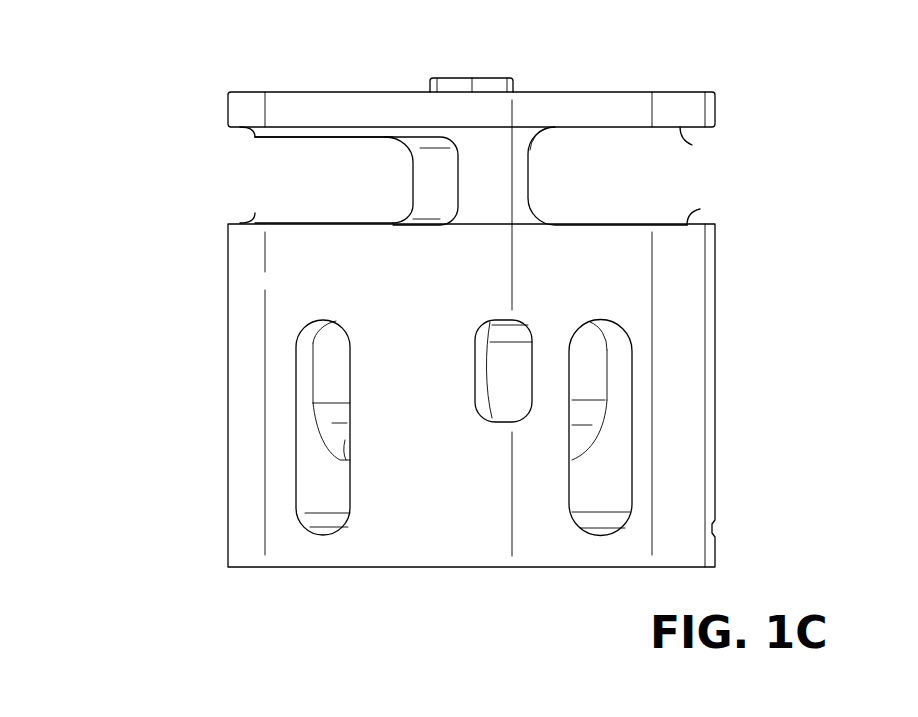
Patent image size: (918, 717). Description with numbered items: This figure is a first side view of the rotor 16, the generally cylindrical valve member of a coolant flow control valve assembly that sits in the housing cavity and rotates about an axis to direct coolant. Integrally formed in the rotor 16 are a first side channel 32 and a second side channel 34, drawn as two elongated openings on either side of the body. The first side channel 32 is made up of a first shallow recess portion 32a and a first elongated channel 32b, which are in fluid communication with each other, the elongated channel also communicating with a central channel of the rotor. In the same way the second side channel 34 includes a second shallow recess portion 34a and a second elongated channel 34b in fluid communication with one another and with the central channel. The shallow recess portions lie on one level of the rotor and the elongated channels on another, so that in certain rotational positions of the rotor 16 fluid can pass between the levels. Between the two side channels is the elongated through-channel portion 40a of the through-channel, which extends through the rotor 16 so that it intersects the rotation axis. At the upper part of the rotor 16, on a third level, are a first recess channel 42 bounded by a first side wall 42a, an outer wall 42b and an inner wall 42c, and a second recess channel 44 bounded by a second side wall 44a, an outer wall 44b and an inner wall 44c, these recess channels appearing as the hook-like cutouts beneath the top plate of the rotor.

The rotor 16 is at (207, 95).
The first recess channel 42 is at (224, 181).
The first side wall 42a is at (430, 163).
The outer wall 42b is at (248, 136).
The inner wall 42c is at (255, 223).
The second recess channel 44 is at (746, 181).
The second side wall 44a is at (528, 162).
The outer wall 44b is at (680, 127).
The inner wall 44c is at (687, 225).
The first side channel 32 is at (293, 407).
The first shallow recess portion 32a is at (320, 341).
The first elongated channel 32b is at (315, 503).
The second side channel 34 is at (637, 403).
The second shallow recess portion 34a is at (617, 347).
The second elongated channel 34b is at (618, 503).
The elongated through-channel portion 40a is at (508, 406).